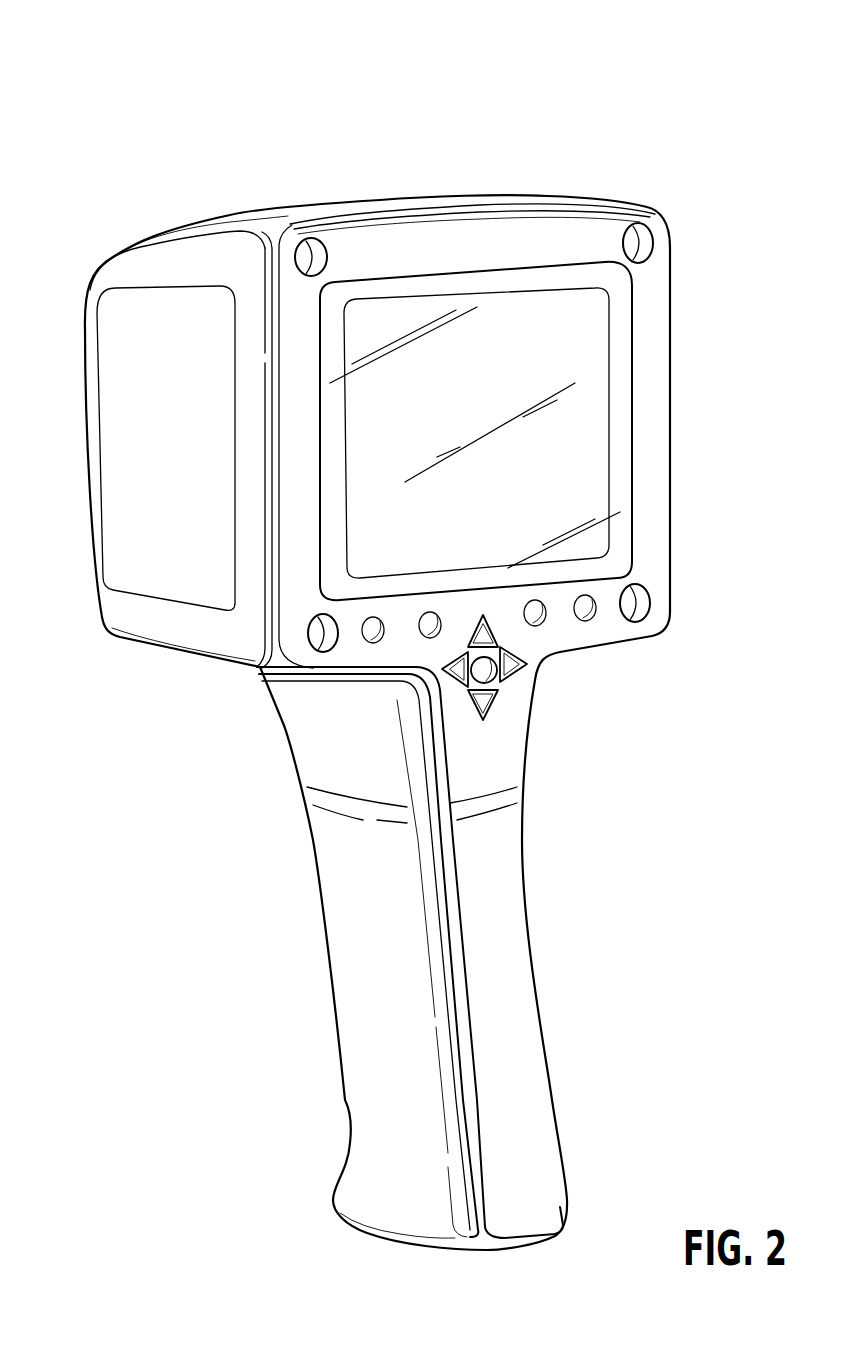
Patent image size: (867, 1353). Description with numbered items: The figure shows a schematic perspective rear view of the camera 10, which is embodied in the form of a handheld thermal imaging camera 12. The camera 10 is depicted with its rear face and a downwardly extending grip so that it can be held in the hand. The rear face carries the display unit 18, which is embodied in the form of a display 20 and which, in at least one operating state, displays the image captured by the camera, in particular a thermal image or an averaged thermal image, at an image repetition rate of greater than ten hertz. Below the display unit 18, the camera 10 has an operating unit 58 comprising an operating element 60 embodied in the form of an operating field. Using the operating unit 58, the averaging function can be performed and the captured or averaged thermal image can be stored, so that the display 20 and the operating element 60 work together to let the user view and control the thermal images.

The camera 10 is at (106, 116).
The handheld thermal imaging camera 12 is at (323, 116).
The display unit 18 is at (633, 354).
The display 20 is at (588, 453).
The operating unit 58 is at (568, 666).
The operating element 60 is at (492, 680).